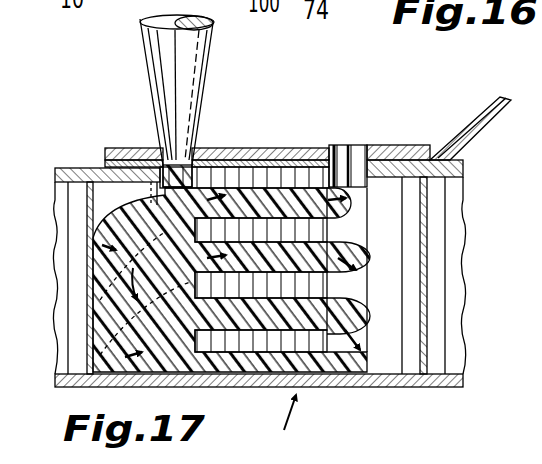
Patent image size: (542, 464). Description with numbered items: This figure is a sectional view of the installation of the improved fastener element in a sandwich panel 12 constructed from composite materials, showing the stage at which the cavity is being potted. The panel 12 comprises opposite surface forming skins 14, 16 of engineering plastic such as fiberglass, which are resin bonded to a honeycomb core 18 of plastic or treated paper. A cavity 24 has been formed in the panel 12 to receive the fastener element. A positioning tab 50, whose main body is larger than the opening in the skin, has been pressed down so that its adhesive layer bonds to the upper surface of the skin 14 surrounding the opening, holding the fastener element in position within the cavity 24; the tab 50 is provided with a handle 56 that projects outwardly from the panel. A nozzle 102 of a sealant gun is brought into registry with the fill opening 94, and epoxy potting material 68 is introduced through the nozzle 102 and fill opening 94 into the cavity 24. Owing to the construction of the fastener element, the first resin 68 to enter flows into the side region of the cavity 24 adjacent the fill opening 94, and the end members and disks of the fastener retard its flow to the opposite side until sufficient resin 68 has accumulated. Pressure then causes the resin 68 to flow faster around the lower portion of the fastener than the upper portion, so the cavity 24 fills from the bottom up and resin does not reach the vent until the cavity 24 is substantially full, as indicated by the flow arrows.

The sandwich panel 12 is at (283, 429).
The surface forming skin 14 is at (451, 163).
The skin layer 16 is at (407, 387).
The honeycomb core 18 is at (434, 306).
The cavity 24 is at (98, 186).
The positioning tab 50 is at (290, 147).
The handle 56 is at (485, 98).
The epoxy potting material 68 is at (88, 292).
The fill opening 94 is at (143, 148).
The nozzle 102 is at (183, 104).